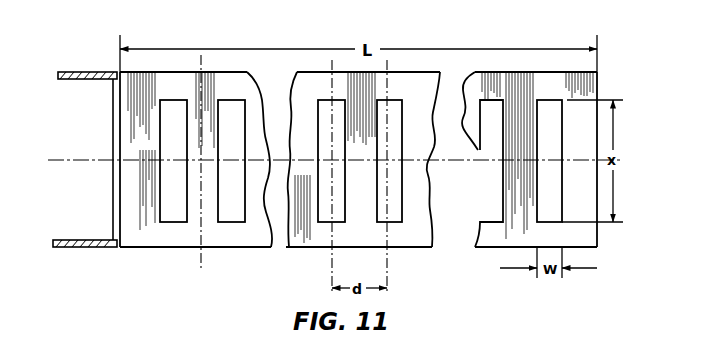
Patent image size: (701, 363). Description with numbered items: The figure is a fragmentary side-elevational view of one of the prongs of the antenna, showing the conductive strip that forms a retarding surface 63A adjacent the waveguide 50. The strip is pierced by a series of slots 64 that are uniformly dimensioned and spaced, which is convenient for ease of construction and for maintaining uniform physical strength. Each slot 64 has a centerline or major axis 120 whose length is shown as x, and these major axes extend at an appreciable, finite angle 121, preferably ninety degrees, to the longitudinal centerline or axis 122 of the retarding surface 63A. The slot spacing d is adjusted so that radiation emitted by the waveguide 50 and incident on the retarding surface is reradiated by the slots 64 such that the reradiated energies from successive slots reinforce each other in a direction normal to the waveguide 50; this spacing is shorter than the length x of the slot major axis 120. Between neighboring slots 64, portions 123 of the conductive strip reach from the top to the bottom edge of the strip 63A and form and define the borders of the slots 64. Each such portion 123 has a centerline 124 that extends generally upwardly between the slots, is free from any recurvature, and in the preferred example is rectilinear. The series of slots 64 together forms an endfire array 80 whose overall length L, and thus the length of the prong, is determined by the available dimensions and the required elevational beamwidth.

The waveguide 50 is at (80, 72).
The retarding surface 63A is at (413, 223).
The slots 64 is at (163, 246).
The endfire array 80 is at (238, 226).
The slot centerline 120 is at (390, 280).
The angle 121 is at (398, 189).
The longitudinal centerline 122 is at (90, 160).
The portions of the conductive strip 123 is at (193, 112).
The centerline of the portion 124 is at (201, 262).